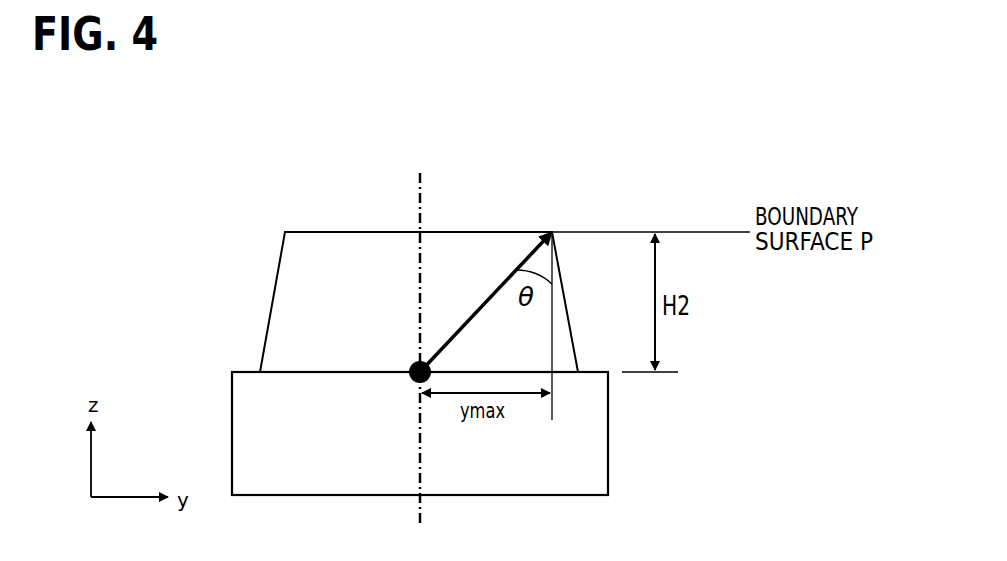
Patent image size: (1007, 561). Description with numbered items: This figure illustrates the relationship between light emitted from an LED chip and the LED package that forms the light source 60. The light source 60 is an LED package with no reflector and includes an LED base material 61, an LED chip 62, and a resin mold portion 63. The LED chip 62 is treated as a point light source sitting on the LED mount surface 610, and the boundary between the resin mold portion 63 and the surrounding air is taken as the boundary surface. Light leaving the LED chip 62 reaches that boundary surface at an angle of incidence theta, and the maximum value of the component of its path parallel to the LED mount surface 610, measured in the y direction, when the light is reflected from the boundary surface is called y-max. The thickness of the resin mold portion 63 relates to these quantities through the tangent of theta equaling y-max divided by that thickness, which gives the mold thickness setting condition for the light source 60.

The light source 60 is at (415, 285).
The LED base material 61 is at (607, 490).
The LED chip 62 is at (416, 383).
The resin mold portion 63 is at (288, 282).
The LED mount surface 610 is at (312, 372).